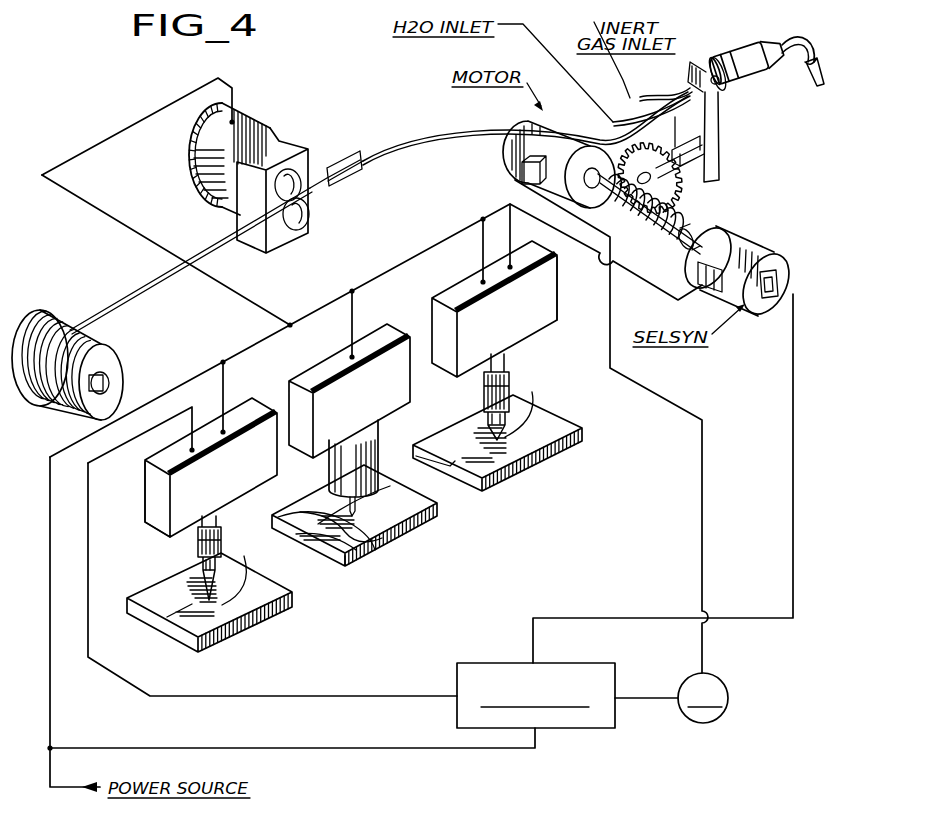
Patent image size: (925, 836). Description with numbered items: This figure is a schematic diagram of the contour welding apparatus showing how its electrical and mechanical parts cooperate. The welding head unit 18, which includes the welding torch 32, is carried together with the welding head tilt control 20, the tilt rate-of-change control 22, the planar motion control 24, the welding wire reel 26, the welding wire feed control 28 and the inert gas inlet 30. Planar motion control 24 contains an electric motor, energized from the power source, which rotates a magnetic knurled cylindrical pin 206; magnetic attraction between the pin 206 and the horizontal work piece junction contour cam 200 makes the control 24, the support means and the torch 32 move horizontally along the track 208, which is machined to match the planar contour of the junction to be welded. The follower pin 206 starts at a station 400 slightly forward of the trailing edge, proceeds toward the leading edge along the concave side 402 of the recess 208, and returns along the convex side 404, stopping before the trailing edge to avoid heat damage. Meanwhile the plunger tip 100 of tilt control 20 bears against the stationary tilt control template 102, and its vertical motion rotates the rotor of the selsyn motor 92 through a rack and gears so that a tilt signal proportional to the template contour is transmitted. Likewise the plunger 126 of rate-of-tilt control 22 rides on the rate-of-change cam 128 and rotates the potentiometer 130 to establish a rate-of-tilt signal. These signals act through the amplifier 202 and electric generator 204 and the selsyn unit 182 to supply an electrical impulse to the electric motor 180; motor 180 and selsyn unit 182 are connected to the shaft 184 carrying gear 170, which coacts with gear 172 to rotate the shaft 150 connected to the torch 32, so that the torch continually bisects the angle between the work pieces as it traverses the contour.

The welding head unit 18 is at (713, 54).
The welding head tilt control 20 is at (445, 287).
The welding head tilt rate-of-change control 22 is at (248, 398).
The welding head planar motion control 24 is at (383, 320).
The welding wire reel 26 is at (62, 308).
The welding wire feed control 28 is at (210, 150).
The inert gas inlet 30 is at (640, 97).
The welding torch 32 is at (816, 53).
The selsyn motor 92 is at (549, 300).
The plunger tip 100 is at (477, 423).
The welding head tilt control template 102 is at (551, 414).
The plunger 126 is at (197, 583).
The welding head tilt rate-of-change cam 128 is at (250, 597).
The potentiometer 130 is at (150, 498).
The shaft 150 is at (702, 147).
The gear 170 is at (647, 213).
The gear 172 is at (702, 182).
The electric motor 180 is at (537, 120).
The selsyn unit 182 is at (747, 240).
The shaft 184 is at (692, 233).
The work piece junction contour cam 200 is at (430, 517).
The amplifier 202 is at (481, 670).
The electric generator 204 is at (728, 699).
The magnetic knurled cylindrical pin 206 is at (317, 500).
The track 208 is at (365, 556).
The station 400 is at (360, 510).
The concave side 402 is at (281, 518).
The convex side 404 is at (314, 549).